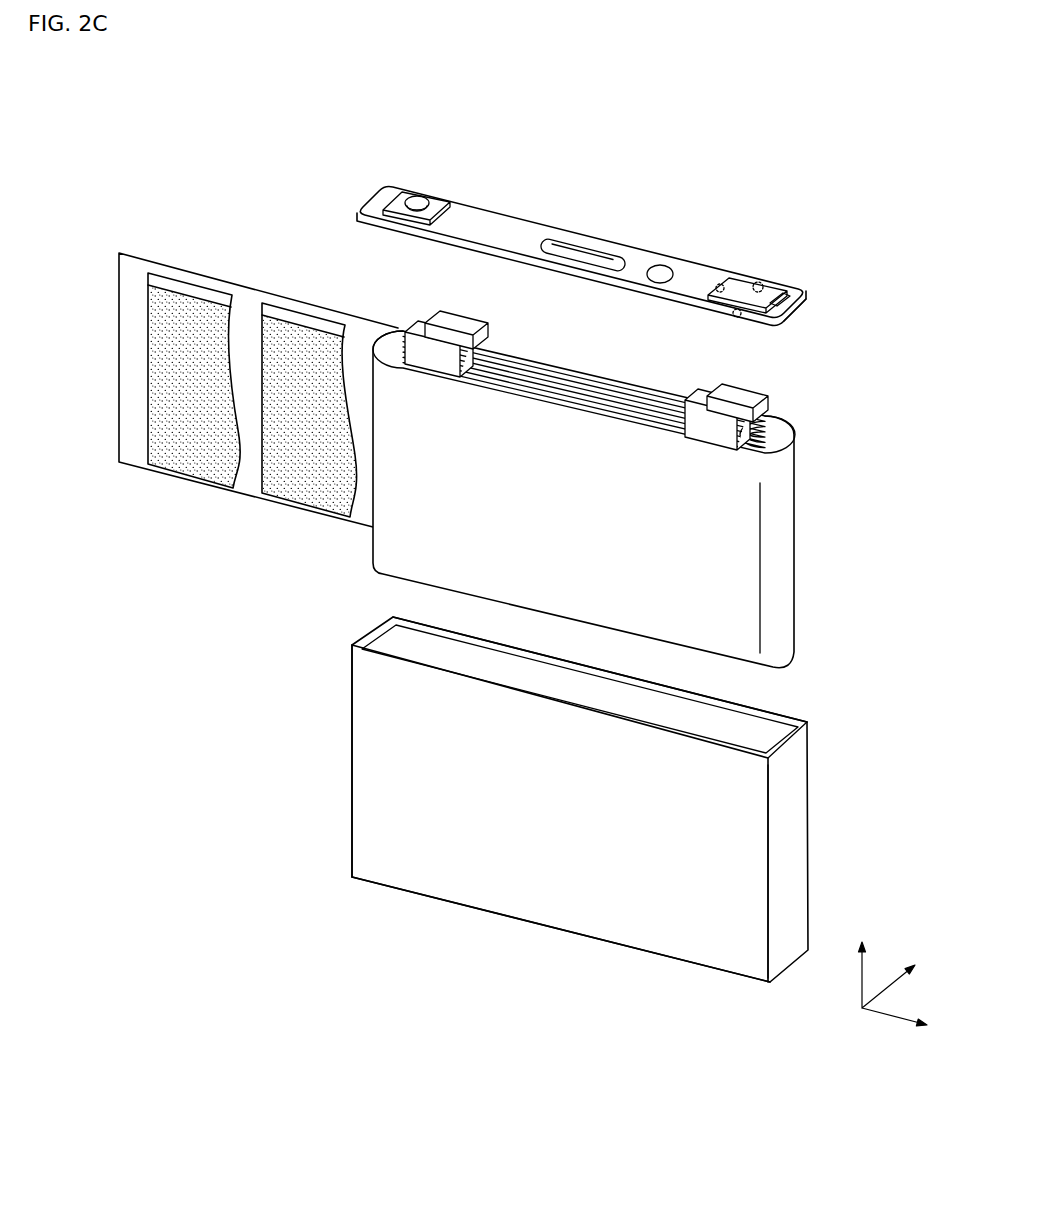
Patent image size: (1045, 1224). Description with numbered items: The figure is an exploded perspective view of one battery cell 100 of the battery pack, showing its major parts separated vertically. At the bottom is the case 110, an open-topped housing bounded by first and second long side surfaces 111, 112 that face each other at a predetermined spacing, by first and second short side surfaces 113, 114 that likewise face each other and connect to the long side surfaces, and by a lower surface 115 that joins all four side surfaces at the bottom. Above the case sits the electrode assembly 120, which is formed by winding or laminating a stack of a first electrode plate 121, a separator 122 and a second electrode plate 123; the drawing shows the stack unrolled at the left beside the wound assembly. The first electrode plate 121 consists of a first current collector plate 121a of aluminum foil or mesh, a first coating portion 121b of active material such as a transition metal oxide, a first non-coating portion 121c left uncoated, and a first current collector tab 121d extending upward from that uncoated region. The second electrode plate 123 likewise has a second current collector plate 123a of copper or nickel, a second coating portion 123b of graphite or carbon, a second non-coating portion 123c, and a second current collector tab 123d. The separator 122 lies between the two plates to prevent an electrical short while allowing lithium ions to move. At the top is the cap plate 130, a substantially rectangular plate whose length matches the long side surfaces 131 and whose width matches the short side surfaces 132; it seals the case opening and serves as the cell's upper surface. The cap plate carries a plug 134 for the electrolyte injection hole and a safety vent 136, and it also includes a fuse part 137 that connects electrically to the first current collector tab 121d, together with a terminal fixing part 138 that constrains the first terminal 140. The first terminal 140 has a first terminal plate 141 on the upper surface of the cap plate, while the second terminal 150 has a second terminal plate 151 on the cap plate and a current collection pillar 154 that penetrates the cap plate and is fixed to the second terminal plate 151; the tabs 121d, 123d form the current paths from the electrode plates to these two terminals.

The battery cell 100 is at (879, 180).
The case 110 is at (583, 826).
The first long side surface 111 is at (648, 940).
The second long side surface 112 is at (812, 795).
The first short side surface 113 is at (352, 757).
The second short side surface 114 is at (798, 855).
The lower surface 115 is at (553, 933).
The electrode assembly 120 is at (630, 469).
The first electrode plate 121 is at (142, 348).
The first current collector plate 121a is at (148, 288).
The first coating portion 121b is at (160, 323).
The first non-coating portion 121c is at (187, 283).
The first current collector tab 121d is at (737, 395).
The separator 122 is at (133, 458).
The second electrode plate 123 is at (199, 376).
The second current collector plate 123a is at (260, 370).
The second coating portion 123b is at (275, 402).
The second non-coating portion 123c is at (302, 312).
The second current collector tab 123d is at (457, 320).
The cap plate 130 is at (616, 230).
The long side surface 131 is at (570, 227).
The short side surface 132 is at (795, 315).
The plug 134 is at (660, 271).
The safety vent 136 is at (590, 255).
The fuse part 137 is at (763, 285).
The terminal fixing part 138 is at (790, 290).
The first terminal 140 is at (789, 263).
The first terminal plate 141 is at (738, 277).
The second terminal 150 is at (444, 173).
The second terminal plate 151 is at (410, 195).
The current collection pillar 154 is at (412, 196).